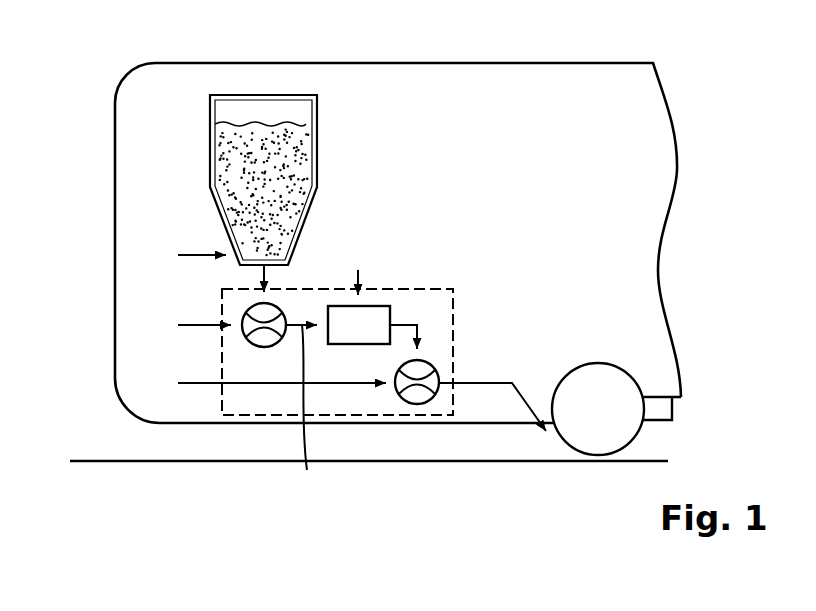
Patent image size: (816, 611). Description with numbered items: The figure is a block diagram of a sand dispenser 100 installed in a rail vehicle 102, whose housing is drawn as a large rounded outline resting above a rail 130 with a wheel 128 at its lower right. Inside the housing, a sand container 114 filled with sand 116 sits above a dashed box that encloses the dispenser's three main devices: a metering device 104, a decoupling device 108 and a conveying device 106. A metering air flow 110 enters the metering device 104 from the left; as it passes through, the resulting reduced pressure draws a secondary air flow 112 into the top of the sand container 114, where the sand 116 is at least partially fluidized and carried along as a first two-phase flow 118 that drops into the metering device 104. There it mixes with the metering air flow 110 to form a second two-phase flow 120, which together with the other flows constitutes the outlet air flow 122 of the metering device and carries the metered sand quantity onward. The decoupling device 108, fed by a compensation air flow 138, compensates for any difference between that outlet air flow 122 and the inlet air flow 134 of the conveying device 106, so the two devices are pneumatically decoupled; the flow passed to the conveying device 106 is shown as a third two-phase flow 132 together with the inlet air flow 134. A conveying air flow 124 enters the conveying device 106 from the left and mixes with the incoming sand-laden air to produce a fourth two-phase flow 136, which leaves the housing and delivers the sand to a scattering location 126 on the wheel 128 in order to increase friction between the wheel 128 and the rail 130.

The sand dispenser 100 is at (432, 288).
The rail vehicle 102 is at (130, 82).
The metering device 104 is at (277, 310).
The conveying device 106 is at (431, 366).
The decoupling device 108 is at (378, 306).
The metering air flow 110 is at (178, 325).
The secondary air flow 112 is at (178, 255).
The sand container 114 is at (258, 95).
The sand 116 is at (290, 147).
The first two-phase flow 118 is at (263, 281).
The second two-phase flow 120 is at (305, 412).
The outlet air flow 122 is at (305, 412).
The conveying air flow 124 is at (178, 383).
The scattering location 126 is at (570, 444).
The wheel 128 is at (681, 397).
The rail 130 is at (561, 462).
The third two-phase flow 132 is at (467, 321).
The inlet air flow 134 is at (417, 334).
The fourth two-phase flow 136 is at (490, 384).
The compensation air flow 138 is at (358, 270).